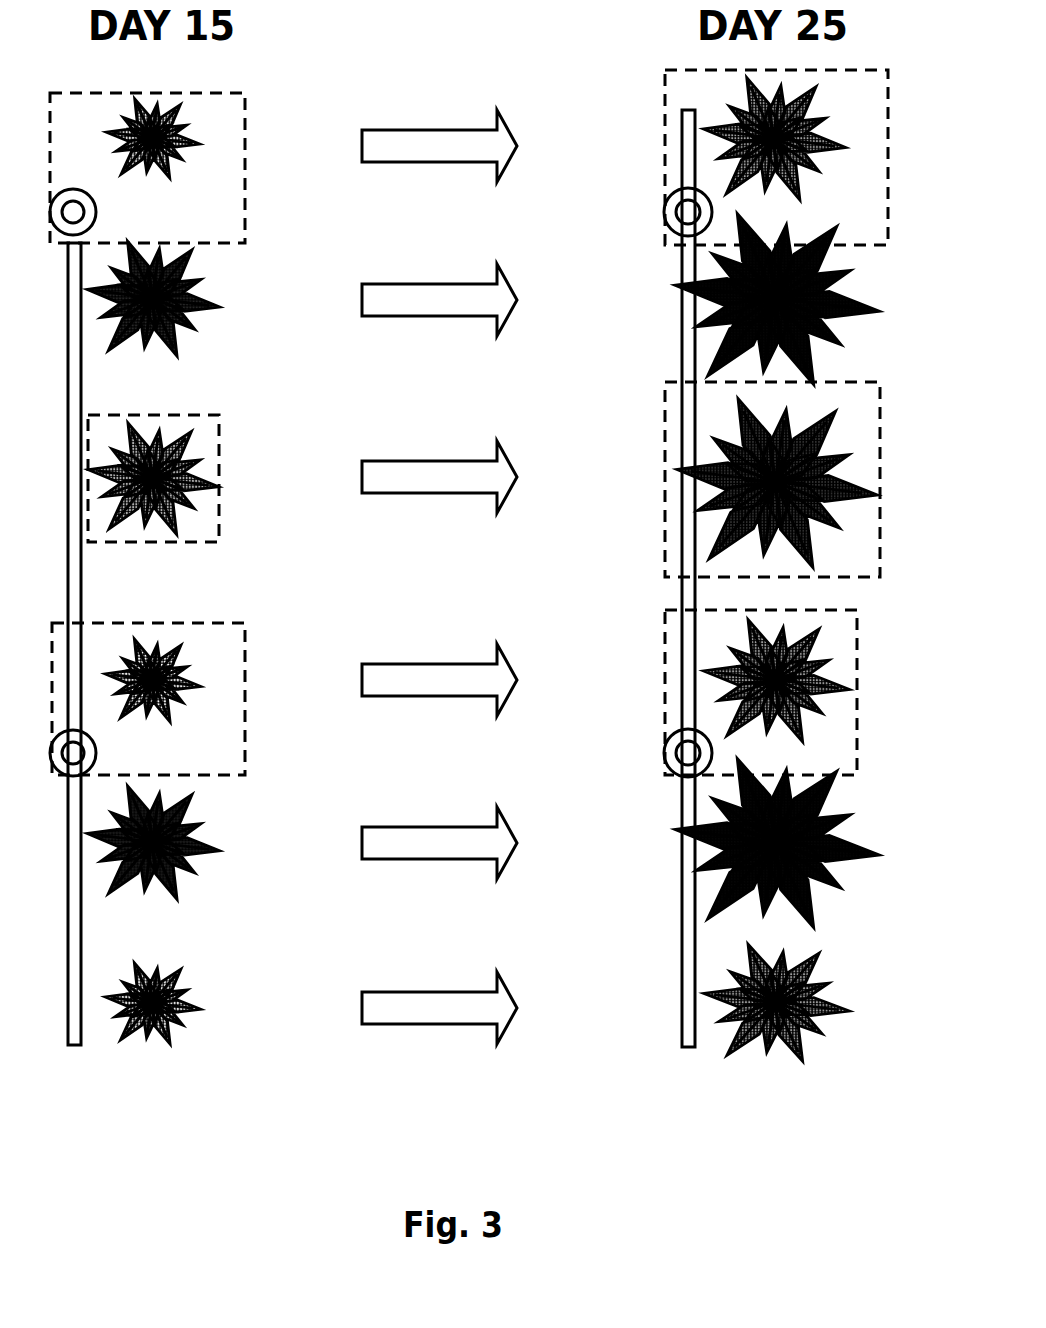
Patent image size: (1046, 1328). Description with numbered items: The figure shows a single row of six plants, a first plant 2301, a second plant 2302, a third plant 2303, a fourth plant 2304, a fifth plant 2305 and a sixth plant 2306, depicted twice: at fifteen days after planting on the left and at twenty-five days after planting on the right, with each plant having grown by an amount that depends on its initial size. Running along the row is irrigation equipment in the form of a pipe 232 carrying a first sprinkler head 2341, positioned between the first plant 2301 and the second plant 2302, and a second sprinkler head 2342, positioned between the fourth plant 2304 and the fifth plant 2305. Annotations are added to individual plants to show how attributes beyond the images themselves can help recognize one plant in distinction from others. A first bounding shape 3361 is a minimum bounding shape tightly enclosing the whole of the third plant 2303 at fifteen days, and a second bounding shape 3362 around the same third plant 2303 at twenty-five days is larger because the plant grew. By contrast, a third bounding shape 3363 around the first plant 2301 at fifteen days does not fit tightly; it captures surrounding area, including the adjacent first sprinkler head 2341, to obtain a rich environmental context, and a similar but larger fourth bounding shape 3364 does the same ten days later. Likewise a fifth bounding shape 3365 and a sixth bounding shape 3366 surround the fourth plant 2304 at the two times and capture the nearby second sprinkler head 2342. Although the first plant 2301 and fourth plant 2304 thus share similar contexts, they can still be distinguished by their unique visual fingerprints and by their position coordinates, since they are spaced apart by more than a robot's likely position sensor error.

The first plant 2301 is at (222, 146).
The second plant 2302 is at (222, 300).
The third plant 2303 is at (222, 477).
The fourth plant 2304 is at (222, 680).
The fifth plant 2305 is at (222, 843).
The sixth plant 2306 is at (222, 1008).
The pipe 232 is at (82, 600).
The first sprinkler head 2341 is at (96, 216).
The second sprinkler head 2342 is at (96, 757).
The first bounding shape 3361 is at (220, 543).
The second bounding shape 3362 is at (881, 520).
The third bounding shape 3363 is at (246, 215).
The fourth bounding shape 3364 is at (889, 215).
The fifth bounding shape 3365 is at (246, 745).
The sixth bounding shape 3366 is at (858, 745).